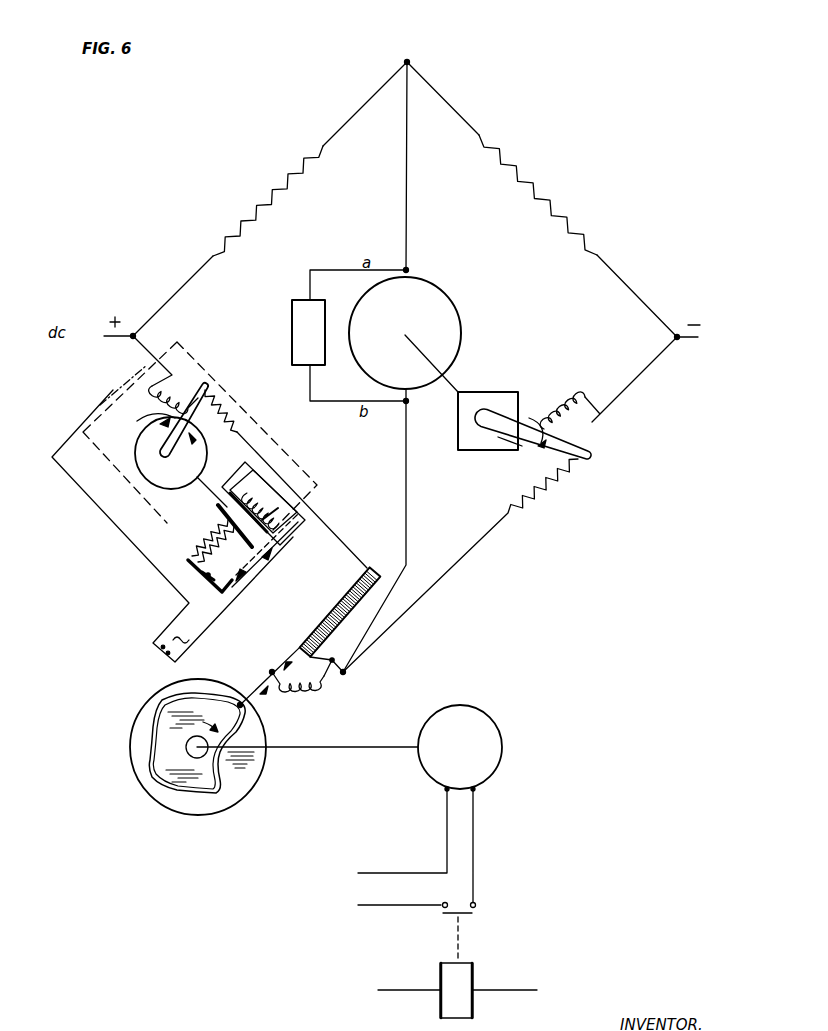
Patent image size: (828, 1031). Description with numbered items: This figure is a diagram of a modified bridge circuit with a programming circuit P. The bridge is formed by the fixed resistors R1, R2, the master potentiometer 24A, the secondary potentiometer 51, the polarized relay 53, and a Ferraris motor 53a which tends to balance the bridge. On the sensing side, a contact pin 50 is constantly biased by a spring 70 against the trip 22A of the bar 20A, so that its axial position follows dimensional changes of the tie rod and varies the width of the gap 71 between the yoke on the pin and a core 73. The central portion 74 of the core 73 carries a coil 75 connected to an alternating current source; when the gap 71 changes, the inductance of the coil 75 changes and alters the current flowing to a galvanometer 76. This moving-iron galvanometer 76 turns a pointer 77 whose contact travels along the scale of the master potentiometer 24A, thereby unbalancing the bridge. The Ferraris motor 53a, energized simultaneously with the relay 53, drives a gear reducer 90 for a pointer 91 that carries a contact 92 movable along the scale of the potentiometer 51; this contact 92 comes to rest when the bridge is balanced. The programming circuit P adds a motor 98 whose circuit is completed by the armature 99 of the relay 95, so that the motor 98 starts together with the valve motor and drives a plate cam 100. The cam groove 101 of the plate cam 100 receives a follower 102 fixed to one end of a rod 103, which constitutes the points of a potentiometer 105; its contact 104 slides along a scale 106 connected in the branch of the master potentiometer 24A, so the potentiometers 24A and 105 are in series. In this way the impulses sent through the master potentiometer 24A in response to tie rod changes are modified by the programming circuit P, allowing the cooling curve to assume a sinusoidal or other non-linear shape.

The fixed resistor R1 is at (256, 198).
The fixed resistor R2 is at (568, 212).
The polarized relay 53 is at (292, 316).
The Ferraris motor 53a is at (447, 308).
The gear reducer 90 is at (517, 397).
The pointer 91 is at (507, 444).
The contact 92 is at (582, 460).
The secondary potentiometer 51 is at (538, 508).
The master potentiometer 24A is at (97, 420).
The galvanometer 76 is at (147, 470).
The pointer 77 is at (145, 418).
The core 73 is at (258, 482).
The coil 75 is at (260, 483).
The central portion 74 is at (267, 520).
The gap 71 is at (227, 505).
The spring 70 is at (208, 532).
The contact pin 50 is at (193, 552).
The bar 20A is at (228, 595).
The trip 22A is at (208, 575).
The scale 106 is at (358, 580).
The potentiometer 105 is at (382, 558).
The contact 104 is at (313, 621).
The rod 103 is at (260, 678).
The follower 102 is at (242, 707).
The plate cam 100 is at (255, 767).
The cam groove 101 is at (212, 793).
The programming circuit P is at (106, 775).
The motor 98 is at (492, 730).
The armature 99 is at (466, 917).
The relay 95 is at (467, 1012).